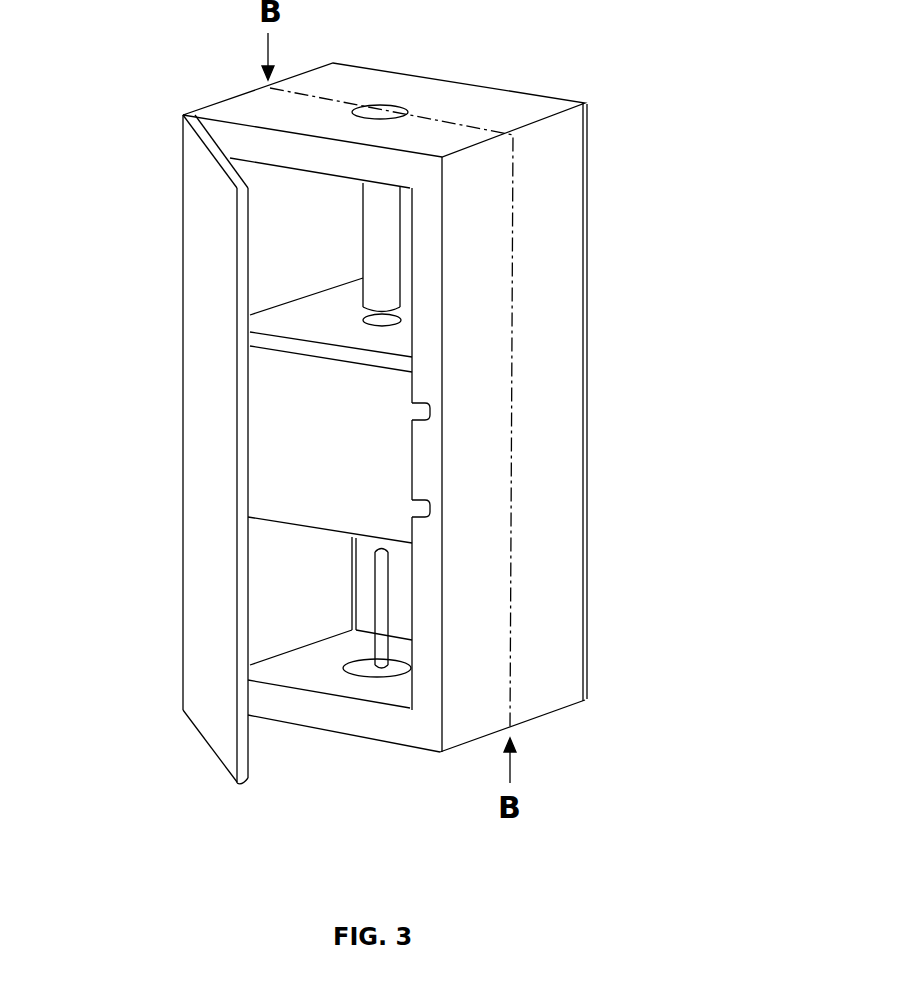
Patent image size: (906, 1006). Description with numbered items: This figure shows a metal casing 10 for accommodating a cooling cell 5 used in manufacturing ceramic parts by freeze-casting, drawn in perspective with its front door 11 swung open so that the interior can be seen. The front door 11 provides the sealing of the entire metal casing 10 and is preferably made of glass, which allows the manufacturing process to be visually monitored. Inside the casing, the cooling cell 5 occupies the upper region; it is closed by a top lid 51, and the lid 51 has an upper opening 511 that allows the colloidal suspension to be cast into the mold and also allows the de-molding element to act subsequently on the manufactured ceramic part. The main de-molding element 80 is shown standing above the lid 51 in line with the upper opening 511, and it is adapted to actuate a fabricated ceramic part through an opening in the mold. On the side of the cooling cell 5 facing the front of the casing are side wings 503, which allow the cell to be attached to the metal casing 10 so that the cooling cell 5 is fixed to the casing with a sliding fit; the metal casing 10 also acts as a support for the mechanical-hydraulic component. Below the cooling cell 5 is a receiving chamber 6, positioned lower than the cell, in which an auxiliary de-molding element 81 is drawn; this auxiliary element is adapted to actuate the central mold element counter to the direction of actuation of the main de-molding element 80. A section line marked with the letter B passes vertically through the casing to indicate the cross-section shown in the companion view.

The metal casing 10 is at (513, 108).
The front door 11 is at (213, 212).
The main de-molding element 80 is at (386, 236).
The upper opening 511 is at (402, 322).
The top lid 51 is at (327, 337).
The cooling cell 5 is at (362, 400).
The side wings 503 is at (430, 417).
The receiving chamber 6 is at (305, 612).
The auxiliary de-molding element 81 is at (383, 623).